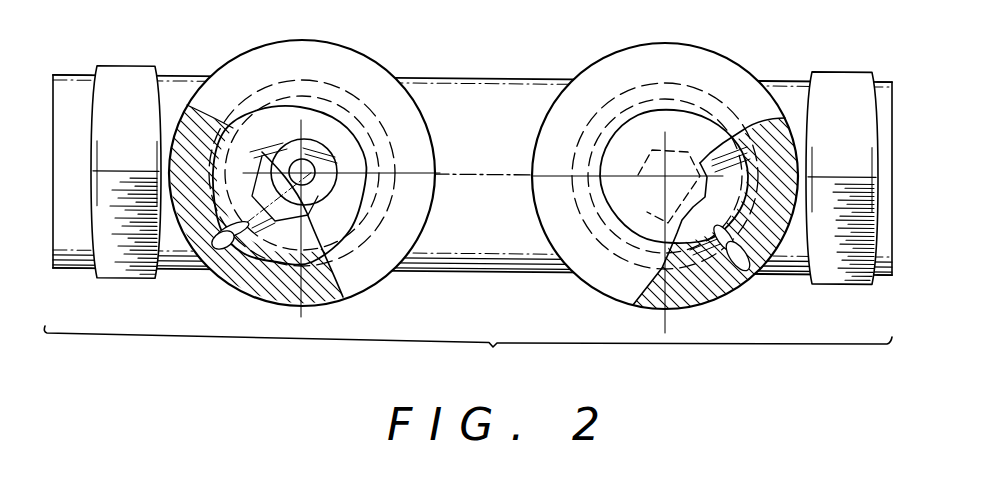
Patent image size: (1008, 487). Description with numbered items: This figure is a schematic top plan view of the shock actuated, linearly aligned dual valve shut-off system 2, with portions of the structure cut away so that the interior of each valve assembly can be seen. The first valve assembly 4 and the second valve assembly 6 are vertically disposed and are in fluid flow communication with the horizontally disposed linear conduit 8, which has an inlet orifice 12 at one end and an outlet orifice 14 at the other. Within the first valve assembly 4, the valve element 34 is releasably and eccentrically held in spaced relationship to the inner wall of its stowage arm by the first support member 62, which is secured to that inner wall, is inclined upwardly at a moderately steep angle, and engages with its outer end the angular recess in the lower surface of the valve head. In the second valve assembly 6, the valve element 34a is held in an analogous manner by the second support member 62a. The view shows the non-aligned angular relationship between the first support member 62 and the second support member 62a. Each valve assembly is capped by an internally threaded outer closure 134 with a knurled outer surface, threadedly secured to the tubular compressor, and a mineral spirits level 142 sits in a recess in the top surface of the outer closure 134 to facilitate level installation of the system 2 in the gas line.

The dual valve shut-off system 2 is at (468, 352).
The first valve assembly 4 is at (354, 170).
The second valve assembly 6 is at (632, 179).
The linear conduit 8 is at (483, 151).
The inlet orifice 12 is at (72, 171).
The outlet orifice 14 is at (884, 178).
The valve element 34 is at (275, 252).
The valve element 34a is at (700, 256).
The first support member 62 is at (230, 243).
The second support member 62a is at (738, 252).
The outer closure 134 is at (372, 286).
The mineral spirits level 142 is at (310, 143).